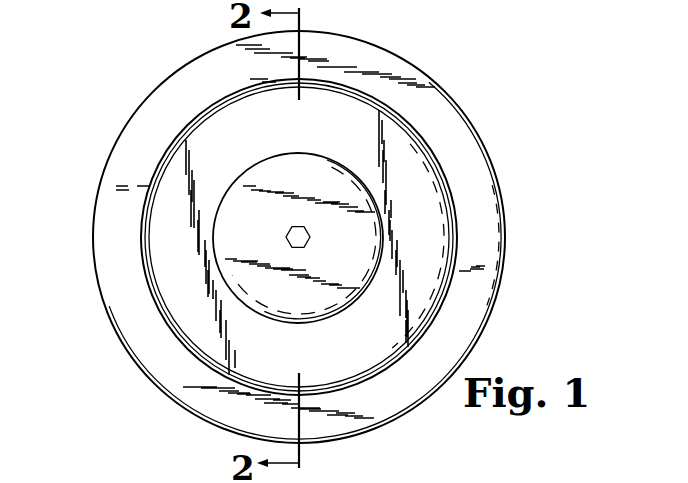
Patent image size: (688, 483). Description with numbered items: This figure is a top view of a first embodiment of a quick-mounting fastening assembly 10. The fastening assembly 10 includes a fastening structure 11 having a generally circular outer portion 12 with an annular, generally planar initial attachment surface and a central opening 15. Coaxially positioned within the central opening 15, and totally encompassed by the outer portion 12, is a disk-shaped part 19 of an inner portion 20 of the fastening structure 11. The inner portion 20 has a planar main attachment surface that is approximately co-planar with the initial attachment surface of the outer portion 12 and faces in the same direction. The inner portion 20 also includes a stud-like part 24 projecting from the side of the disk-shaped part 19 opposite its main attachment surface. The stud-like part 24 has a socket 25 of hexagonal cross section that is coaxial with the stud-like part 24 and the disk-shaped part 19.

The quick-mounting fastening assembly 10 is at (143, 74).
The fastening structure 11 is at (504, 171).
The outer portion 12 is at (465, 115).
The central opening 15 is at (146, 198).
The disk-shaped part 19 is at (183, 302).
The inner portion 20 is at (186, 355).
The stud-like part 24 is at (350, 262).
The socket 25 is at (286, 240).